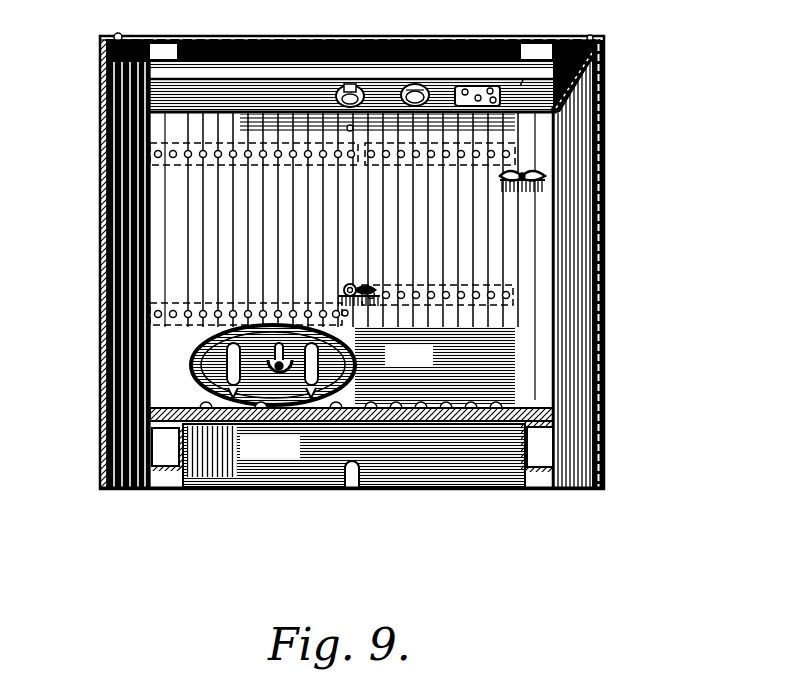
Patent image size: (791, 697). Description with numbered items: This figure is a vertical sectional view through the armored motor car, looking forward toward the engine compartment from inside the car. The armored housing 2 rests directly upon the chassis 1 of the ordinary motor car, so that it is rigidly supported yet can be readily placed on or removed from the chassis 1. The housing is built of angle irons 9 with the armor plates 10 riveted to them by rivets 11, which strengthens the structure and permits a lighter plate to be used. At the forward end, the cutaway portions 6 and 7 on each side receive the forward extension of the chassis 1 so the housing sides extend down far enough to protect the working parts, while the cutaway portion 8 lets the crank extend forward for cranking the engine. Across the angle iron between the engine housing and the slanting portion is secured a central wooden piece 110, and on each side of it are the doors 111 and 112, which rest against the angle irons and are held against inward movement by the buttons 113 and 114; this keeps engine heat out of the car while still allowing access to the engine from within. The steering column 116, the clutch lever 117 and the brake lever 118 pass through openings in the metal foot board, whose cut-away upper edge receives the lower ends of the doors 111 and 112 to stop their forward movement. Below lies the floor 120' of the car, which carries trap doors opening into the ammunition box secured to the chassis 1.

The chassis 1 is at (165, 472).
The armored housing 2 is at (583, 237).
The cutaway portion 6 is at (175, 480).
The cutaway portion 7 is at (543, 489).
The cutaway portion 8 is at (353, 490).
The angle irons 9 is at (590, 38).
The armor plates 10 is at (585, 76).
The rivets 11 is at (600, 52).
The central wooden piece 110 is at (350, 213).
The door 111 is at (235, 240).
The door 112 is at (500, 266).
The button 113 is at (340, 285).
The button 114 is at (545, 173).
The steering column 116 is at (279, 345).
The clutch lever 117 is at (202, 330).
The brake lever 118 is at (368, 357).
The floor 120' is at (354, 455).